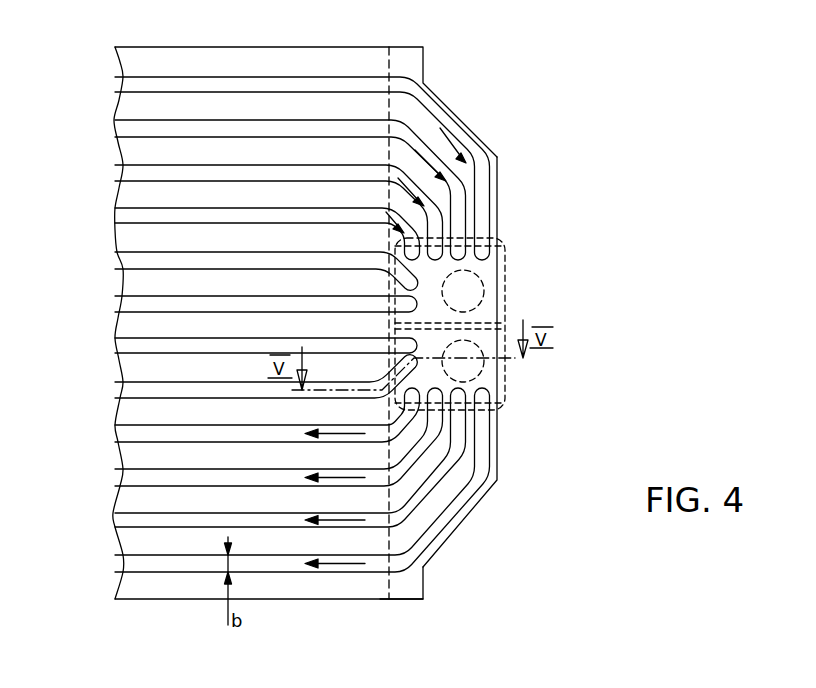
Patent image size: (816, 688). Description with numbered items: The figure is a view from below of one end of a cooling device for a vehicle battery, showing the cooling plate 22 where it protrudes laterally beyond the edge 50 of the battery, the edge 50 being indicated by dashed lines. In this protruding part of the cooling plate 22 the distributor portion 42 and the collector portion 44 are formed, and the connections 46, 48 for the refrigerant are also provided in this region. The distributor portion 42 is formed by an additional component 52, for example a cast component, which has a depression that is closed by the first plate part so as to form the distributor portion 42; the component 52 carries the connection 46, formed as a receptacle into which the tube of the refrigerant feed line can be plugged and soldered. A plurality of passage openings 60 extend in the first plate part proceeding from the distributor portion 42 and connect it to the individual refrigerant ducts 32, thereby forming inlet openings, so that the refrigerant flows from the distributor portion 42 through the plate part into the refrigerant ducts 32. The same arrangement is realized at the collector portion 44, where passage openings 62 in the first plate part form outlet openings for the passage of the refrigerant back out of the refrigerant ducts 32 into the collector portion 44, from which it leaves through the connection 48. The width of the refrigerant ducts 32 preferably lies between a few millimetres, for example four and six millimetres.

The cooling plate 22 is at (483, 519).
The refrigerant ducts 32 is at (425, 110).
The passage openings 62 is at (484, 252).
The collector portion 44 is at (487, 268).
The connection 48 is at (477, 288).
The connection 46 is at (478, 365).
The distributor portion 42 is at (488, 380).
The component 52 is at (498, 400).
The passage openings 60 is at (484, 398).
The edge 50 is at (388, 583).